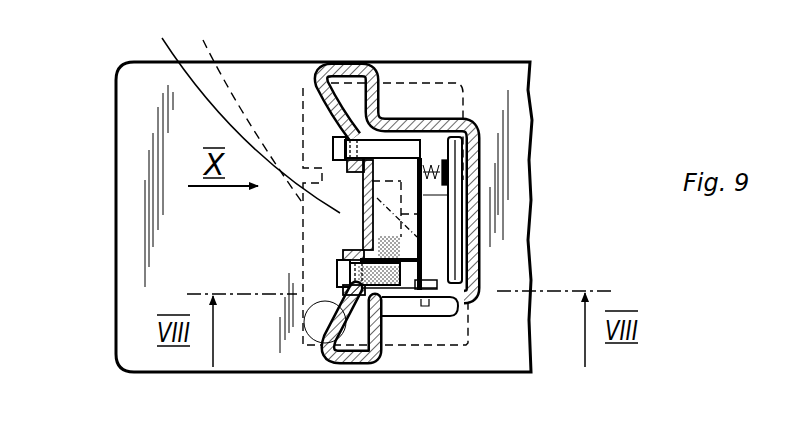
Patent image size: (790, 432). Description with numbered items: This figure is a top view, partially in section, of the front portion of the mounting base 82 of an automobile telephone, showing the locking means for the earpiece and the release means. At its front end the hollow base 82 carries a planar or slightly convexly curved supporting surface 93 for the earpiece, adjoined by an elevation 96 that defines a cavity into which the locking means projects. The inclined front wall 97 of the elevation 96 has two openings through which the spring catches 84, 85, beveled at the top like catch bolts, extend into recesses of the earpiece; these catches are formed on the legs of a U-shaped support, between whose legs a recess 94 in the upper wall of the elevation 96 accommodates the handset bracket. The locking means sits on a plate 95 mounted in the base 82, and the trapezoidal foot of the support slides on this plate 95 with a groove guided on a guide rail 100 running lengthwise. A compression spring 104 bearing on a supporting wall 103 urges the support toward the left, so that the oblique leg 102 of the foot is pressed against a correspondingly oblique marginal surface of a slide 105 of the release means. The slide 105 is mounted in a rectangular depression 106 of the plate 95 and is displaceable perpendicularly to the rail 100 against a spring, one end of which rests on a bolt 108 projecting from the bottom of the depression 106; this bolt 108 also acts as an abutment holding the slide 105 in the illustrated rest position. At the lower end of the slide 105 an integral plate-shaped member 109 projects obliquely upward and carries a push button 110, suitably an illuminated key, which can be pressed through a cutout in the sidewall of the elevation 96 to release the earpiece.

The mounting base 82 is at (110, 62).
The spring catch 84 is at (337, 155).
The spring catch 85 is at (337, 277).
The supporting surface 93 is at (163, 132).
The recess 94 is at (243, 114).
The plate 95 is at (450, 347).
The elevation 96 is at (487, 143).
The front wall 97 is at (305, 317).
The guide rail 100 is at (243, 110).
The leg 102 is at (428, 230).
The supporting wall 103 is at (455, 172).
The compression spring 104 is at (434, 172).
The slide 105 is at (362, 221).
The rectangular depression 106 is at (433, 201).
The bolt 108 is at (400, 247).
The plate-shaped member 109 is at (405, 298).
The push button 110 is at (447, 303).